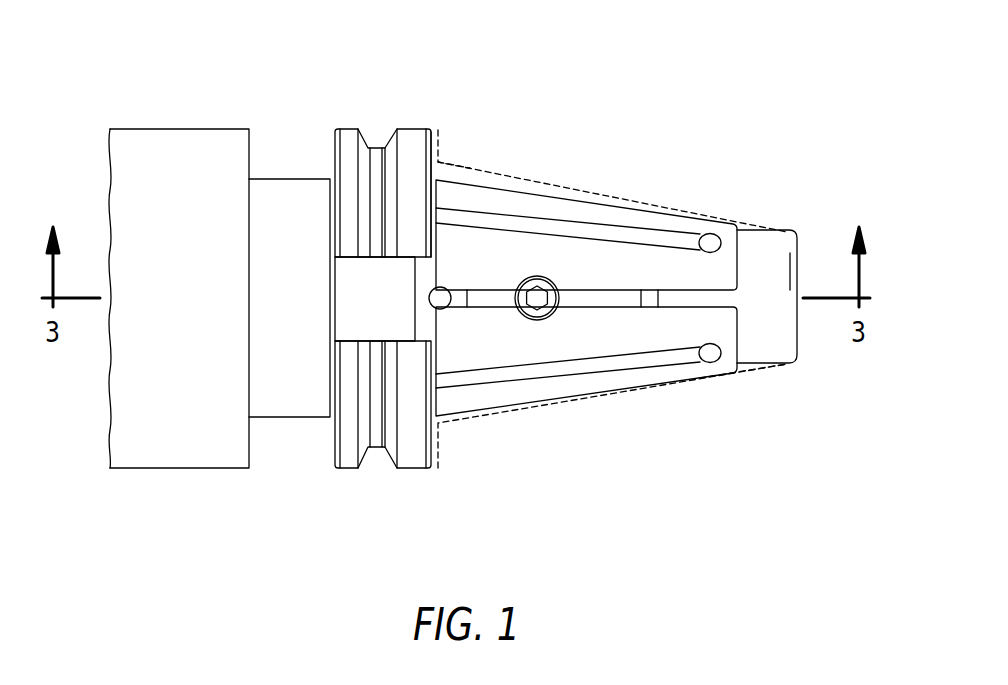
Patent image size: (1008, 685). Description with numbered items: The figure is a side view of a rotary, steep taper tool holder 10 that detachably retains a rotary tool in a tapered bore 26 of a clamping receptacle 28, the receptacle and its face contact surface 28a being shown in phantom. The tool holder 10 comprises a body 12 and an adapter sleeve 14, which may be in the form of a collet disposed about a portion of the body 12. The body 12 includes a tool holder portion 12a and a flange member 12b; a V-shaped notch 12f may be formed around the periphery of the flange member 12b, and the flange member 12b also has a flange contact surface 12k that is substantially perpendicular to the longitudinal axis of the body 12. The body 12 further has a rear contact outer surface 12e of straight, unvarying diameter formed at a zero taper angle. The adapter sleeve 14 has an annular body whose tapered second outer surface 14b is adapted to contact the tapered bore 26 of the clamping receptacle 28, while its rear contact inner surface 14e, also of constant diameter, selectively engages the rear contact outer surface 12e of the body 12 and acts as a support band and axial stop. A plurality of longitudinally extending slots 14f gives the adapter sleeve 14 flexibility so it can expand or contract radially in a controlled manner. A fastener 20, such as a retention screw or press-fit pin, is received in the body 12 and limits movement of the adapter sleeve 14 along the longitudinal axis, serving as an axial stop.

The rotary tapered tool holder 10 is at (843, 128).
The body 12 is at (270, 73).
The tool holder portion 12a is at (300, 178).
The flange member 12b is at (413, 126).
The V-shaped notch 12f is at (374, 144).
The flange contact surface 12k is at (441, 136).
The rear contact outer surface 12e is at (769, 229).
The adapter sleeve 14 is at (638, 203).
The second outer surface 14b is at (553, 212).
The rear contact inner surface 14e is at (607, 303).
The longitudinally extending slots 14f is at (541, 286).
The fastener 20 is at (535, 296).
The tapered bore 26 is at (735, 380).
The clamping receptacle 28 is at (648, 403).
The face contact surface 28a is at (447, 160).